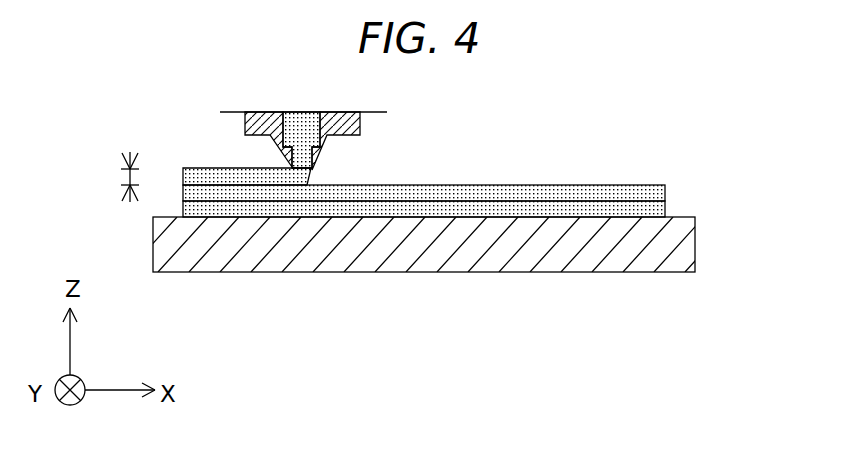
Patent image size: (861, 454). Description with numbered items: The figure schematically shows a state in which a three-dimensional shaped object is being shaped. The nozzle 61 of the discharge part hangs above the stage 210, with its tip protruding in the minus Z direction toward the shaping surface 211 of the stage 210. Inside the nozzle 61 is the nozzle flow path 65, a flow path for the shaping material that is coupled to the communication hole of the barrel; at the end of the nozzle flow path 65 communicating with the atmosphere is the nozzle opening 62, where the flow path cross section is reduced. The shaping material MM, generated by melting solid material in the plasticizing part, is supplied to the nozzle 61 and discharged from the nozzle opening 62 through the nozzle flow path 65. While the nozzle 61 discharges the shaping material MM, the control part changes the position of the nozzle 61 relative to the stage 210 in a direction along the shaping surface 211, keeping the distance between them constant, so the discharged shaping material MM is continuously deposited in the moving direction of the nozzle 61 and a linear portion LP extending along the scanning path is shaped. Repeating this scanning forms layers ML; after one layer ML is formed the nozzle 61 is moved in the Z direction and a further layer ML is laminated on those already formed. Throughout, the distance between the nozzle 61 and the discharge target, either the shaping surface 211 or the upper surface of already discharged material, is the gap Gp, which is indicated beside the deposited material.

The nozzle 61 is at (224, 130).
The nozzle opening 62 is at (311, 176).
The nozzle flow path 65 is at (342, 122).
The shaping material MM is at (313, 127).
The layer ML is at (477, 188).
The linear portion LP is at (198, 176).
The gap Gp is at (122, 178).
The stage 210 is at (718, 211).
The shaping surface 211 is at (212, 216).